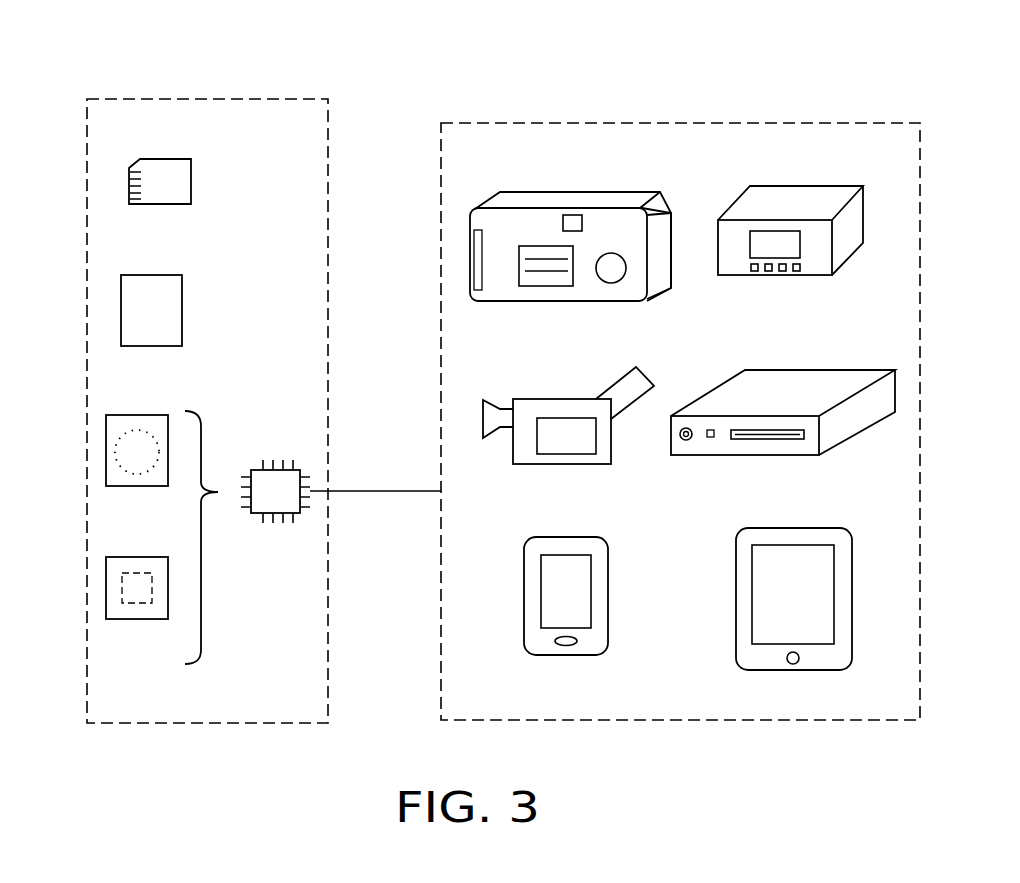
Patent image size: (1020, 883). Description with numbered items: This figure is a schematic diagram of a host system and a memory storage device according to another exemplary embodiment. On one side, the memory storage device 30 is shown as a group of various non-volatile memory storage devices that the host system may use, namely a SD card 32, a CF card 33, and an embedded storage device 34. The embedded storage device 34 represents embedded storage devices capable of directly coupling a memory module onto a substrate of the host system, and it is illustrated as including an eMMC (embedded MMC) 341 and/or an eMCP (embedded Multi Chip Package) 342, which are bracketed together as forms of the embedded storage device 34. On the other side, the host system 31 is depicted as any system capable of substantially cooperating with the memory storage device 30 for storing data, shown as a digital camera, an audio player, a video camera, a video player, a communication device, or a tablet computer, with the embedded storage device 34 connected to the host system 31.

The memory storage device 30 is at (197, 98).
The host system 31 is at (606, 122).
The SD card 32 is at (128, 188).
The CF card 33 is at (121, 311).
The embedded storage device 34 is at (277, 465).
The eMMC 341 is at (106, 452).
The eMCP 342 is at (106, 590).